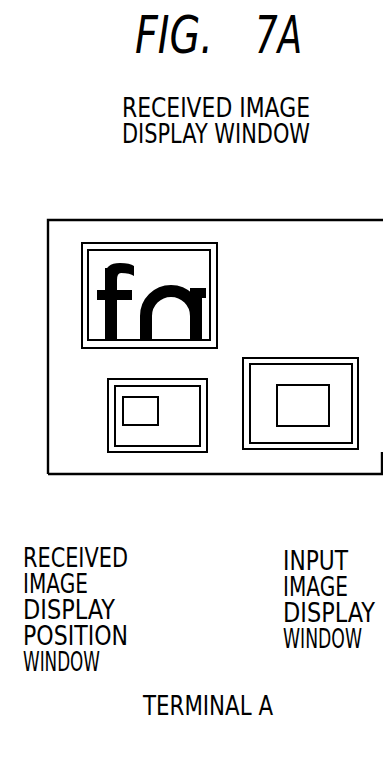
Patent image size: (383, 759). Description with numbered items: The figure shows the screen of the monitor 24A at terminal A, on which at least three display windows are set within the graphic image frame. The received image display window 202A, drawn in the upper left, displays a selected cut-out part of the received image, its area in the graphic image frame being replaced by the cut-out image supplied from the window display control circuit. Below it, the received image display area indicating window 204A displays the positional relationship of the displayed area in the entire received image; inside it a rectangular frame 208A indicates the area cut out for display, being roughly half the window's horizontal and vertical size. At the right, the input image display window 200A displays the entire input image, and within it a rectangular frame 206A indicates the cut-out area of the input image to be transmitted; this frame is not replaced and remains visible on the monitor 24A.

The monitor 24A is at (243, 220).
The received image display window 202A is at (143, 243).
The received image display area indicating window 204A is at (108, 437).
The rectangular frame 208A is at (148, 425).
The input image display window 200A is at (323, 449).
The rectangular frame 206A is at (305, 384).